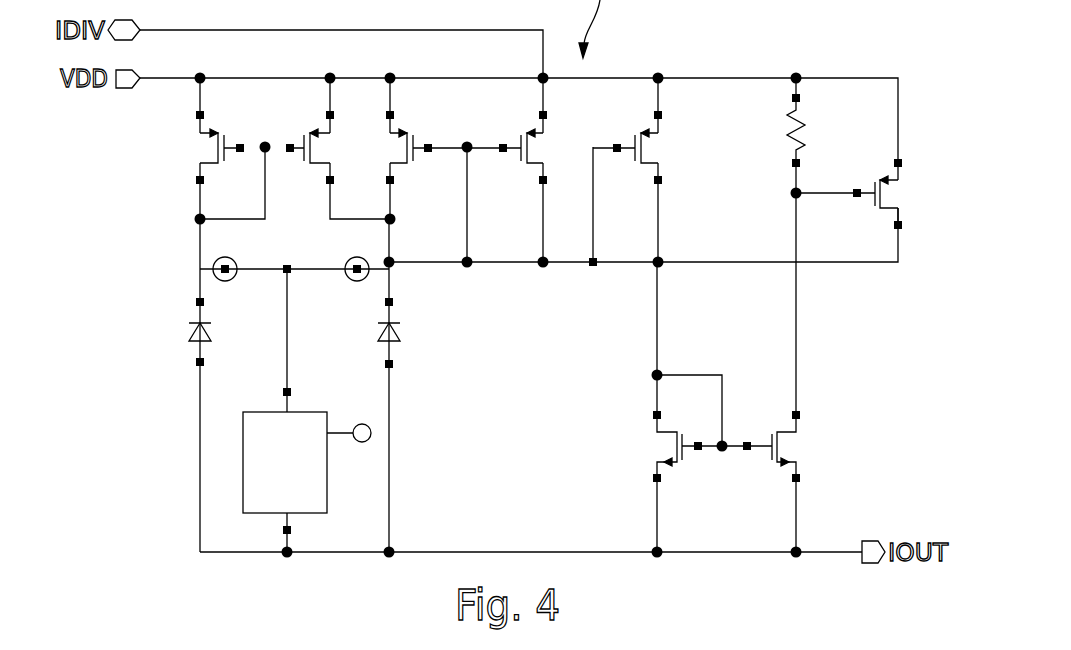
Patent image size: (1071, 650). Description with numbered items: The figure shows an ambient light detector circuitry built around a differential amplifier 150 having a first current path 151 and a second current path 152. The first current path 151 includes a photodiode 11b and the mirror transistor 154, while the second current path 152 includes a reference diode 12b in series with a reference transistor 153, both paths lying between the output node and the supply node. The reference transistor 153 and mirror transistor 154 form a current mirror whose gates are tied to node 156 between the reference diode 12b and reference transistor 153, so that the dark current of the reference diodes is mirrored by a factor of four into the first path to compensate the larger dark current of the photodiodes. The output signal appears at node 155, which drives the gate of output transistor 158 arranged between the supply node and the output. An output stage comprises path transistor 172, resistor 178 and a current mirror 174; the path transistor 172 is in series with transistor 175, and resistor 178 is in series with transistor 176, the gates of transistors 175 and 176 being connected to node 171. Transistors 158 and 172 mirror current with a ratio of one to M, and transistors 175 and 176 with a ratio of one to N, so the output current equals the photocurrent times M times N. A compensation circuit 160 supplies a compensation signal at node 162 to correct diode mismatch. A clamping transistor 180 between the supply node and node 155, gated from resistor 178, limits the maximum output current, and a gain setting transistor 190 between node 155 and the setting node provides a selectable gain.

The differential amplifier 150 is at (183, 265).
The first current path 151 is at (404, 472).
The second current path 152 is at (183, 394).
The reference transistor 153 is at (203, 146).
The mirror transistor 154 is at (312, 195).
The node 155 is at (392, 271).
The node 156 is at (200, 219).
The output transistor 158 is at (400, 134).
The compensation circuit 160 is at (243, 465).
The node 162 is at (290, 271).
The node 171 is at (657, 375).
The path transistor 172 is at (648, 148).
The current mirror 174 is at (733, 384).
The transistor 175 is at (655, 447).
The transistor 176 is at (800, 447).
The resistor 178 is at (787, 127).
The clamping transistor 180 is at (890, 196).
The gain setting transistor 190 is at (532, 150).
The reference diode 12b is at (185, 332).
The photodiode 11b is at (397, 333).